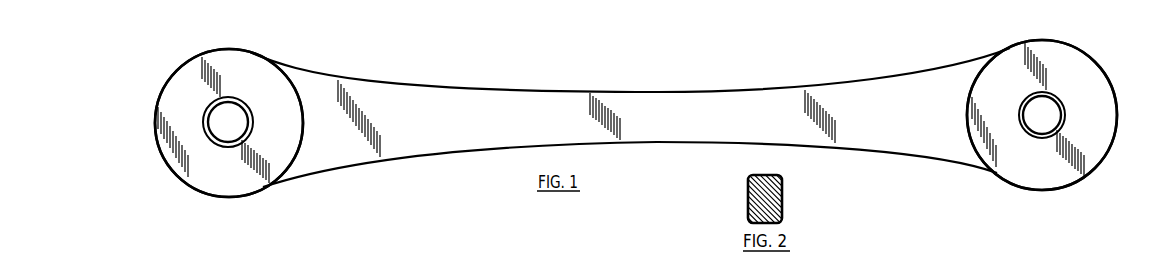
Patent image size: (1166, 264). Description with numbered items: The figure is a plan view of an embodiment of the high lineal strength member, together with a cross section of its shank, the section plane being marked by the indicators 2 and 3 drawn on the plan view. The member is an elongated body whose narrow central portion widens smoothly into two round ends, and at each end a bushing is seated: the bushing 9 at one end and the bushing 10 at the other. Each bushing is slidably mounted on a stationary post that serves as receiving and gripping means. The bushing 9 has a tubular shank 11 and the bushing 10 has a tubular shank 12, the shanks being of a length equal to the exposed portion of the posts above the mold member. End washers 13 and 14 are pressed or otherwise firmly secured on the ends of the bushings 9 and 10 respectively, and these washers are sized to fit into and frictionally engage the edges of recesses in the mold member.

The section line 2- 2 is at (676, 160).
The section line 3- 3 is at (133, 133).
The bushing 9 is at (252, 49).
The bushing 10 is at (1024, 37).
The tubular shank 11 is at (235, 143).
The tubular shank 12 is at (1044, 138).
The end washer 13 is at (190, 178).
The end washer 14 is at (1085, 173).